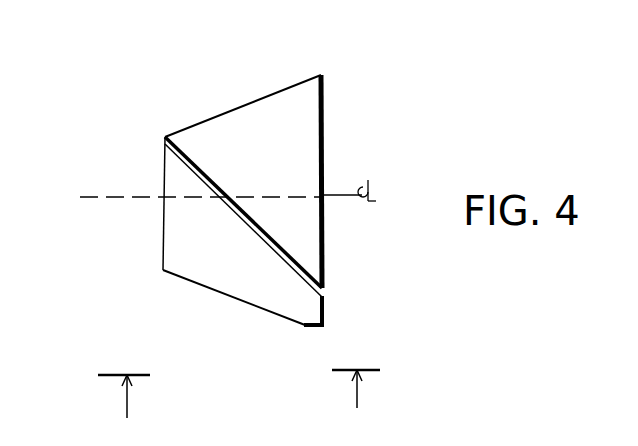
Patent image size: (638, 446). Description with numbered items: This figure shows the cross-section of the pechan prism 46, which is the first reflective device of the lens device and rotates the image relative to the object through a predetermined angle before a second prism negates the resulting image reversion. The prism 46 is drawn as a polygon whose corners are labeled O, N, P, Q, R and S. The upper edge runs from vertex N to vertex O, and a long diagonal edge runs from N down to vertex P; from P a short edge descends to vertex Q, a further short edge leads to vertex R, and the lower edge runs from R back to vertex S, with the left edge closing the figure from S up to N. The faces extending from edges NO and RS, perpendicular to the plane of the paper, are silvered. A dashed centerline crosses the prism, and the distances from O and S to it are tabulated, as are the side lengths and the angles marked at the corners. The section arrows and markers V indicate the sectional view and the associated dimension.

The pechan prism 46 is at (190, 203).
The vertex O of prism O is at (253, 170).
The vertex N of prism N is at (157, 191).
The vertex P of prism P is at (254, 216).
The vertex Q of prism Q is at (324, 317).
The vertex R of prism R is at (237, 312).
The vertex S of prism S is at (231, 224).
The section V is at (88, 418).